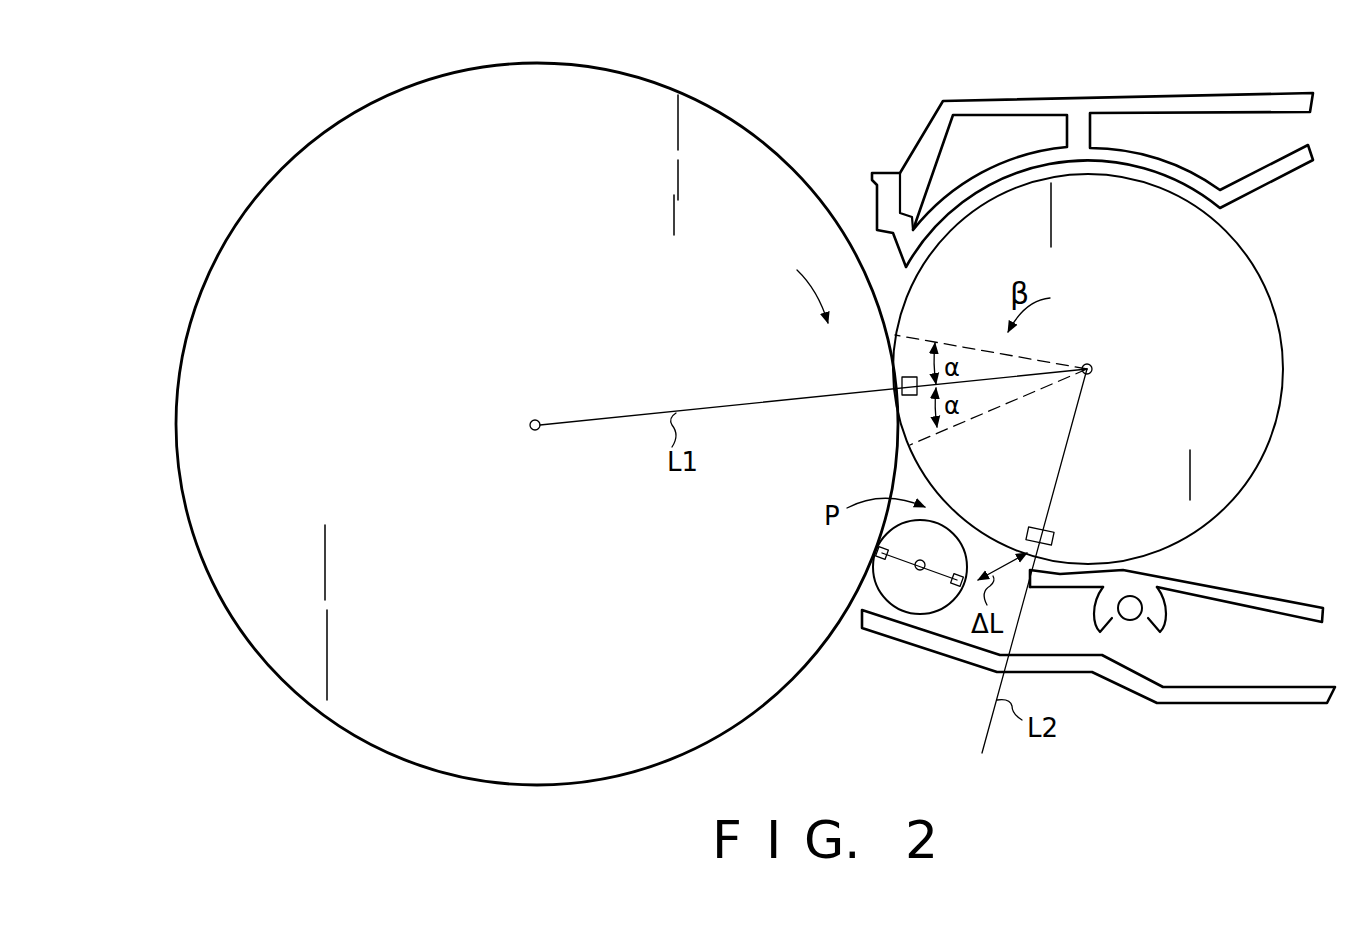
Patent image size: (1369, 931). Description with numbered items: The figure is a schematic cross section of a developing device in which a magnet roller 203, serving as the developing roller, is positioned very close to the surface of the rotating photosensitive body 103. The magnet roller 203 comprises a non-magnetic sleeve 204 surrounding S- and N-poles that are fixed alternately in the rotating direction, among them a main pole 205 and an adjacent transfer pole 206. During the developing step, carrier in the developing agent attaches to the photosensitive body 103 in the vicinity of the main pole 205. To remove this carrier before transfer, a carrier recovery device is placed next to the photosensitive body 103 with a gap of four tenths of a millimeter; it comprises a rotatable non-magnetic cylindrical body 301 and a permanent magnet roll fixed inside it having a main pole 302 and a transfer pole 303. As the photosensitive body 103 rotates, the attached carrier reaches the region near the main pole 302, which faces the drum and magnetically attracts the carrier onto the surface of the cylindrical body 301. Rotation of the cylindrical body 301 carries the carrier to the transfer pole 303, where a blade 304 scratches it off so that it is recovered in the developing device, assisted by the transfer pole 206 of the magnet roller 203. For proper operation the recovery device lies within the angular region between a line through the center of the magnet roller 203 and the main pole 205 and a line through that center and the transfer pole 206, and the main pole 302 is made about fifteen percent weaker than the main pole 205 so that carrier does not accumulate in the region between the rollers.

The photosensitive body 103 is at (697, 135).
The magnet roller 203 is at (1255, 330).
The non-magnetic sleeve 204 is at (1255, 268).
The main pole 205 is at (910, 375).
The transfer pole 206 is at (1055, 532).
The non-magnetic cylindrical body 301 is at (913, 603).
The main pole 302 is at (888, 598).
The transfer pole 303 is at (940, 597).
The blade 304 is at (1050, 585).